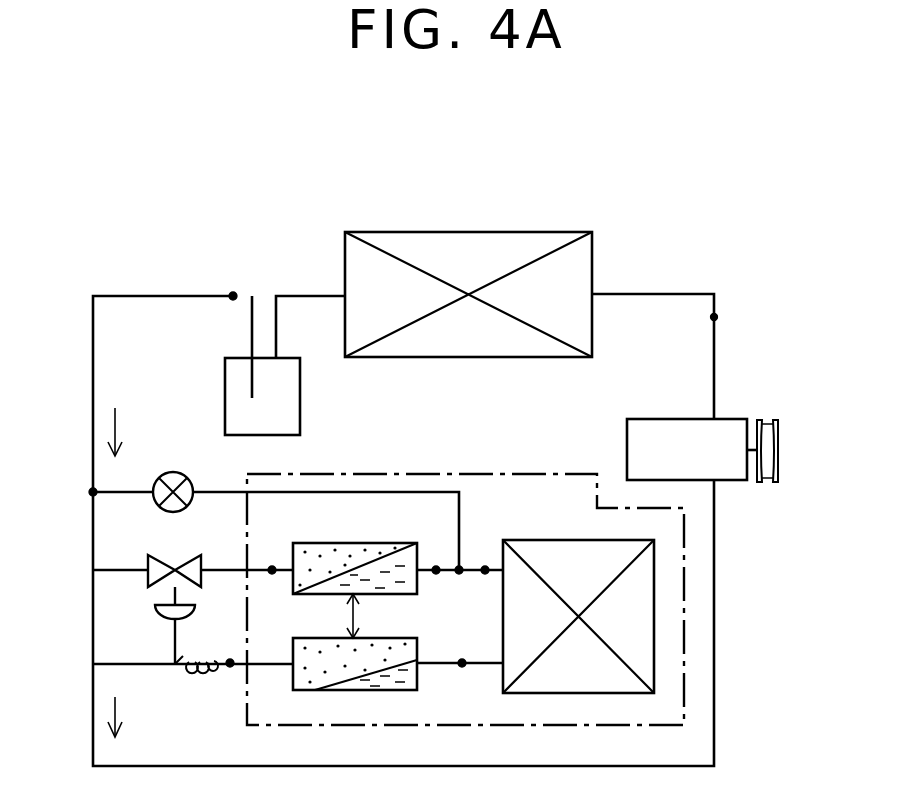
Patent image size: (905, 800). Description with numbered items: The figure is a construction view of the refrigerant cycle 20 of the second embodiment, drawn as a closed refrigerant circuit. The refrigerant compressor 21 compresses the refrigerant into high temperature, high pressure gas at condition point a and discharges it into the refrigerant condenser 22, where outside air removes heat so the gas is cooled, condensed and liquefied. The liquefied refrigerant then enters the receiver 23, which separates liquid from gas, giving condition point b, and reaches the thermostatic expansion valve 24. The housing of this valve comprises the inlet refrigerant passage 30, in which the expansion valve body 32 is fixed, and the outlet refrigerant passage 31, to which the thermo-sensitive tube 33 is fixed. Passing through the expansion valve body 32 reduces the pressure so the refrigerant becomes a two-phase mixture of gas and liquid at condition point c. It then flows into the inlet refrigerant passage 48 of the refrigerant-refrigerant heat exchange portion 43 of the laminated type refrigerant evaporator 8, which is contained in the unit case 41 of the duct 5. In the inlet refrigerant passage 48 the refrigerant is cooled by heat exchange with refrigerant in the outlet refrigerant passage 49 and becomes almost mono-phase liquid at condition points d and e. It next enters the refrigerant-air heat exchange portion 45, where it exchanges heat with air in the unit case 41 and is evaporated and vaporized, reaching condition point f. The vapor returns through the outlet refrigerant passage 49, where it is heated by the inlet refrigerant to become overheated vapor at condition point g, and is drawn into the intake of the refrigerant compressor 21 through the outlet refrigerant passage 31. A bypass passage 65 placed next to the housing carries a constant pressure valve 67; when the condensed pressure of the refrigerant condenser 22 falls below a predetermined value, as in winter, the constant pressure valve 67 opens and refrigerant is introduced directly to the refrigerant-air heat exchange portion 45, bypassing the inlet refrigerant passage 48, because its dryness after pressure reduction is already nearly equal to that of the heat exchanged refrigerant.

The refrigerant cycle 20 is at (118, 290).
The refrigerant compressor 21 is at (724, 430).
The refrigerant condenser 22 is at (456, 247).
The receiver 23 is at (300, 398).
The thermostatic expansion valve 24 is at (161, 614).
The inlet refrigerant passage 30 is at (128, 572).
The outlet refrigerant passage 31 is at (160, 666).
The expansion valve body 32 is at (157, 567).
The thermo-sensitive tube 33 is at (174, 656).
The unit case 41 is at (685, 540).
The refrigerant-refrigerant heat exchange portion 43 is at (370, 581).
The refrigerant-air heat exchange portion 45 is at (578, 596).
The inlet refrigerant passage 48 is at (334, 542).
The outlet refrigerant passage 49 is at (360, 690).
The duct 5 is at (690, 604).
The laminated type refrigerant evaporator 8 is at (660, 656).
The bypass passage 65 is at (220, 490).
The constant pressure valve 67 is at (177, 478).
The condition point a is at (718, 317).
The condition point b is at (232, 294).
The condition point c is at (272, 569).
The condition point d is at (436, 568).
The condition point e is at (485, 568).
The condition point f is at (462, 667).
The condition point g is at (230, 667).